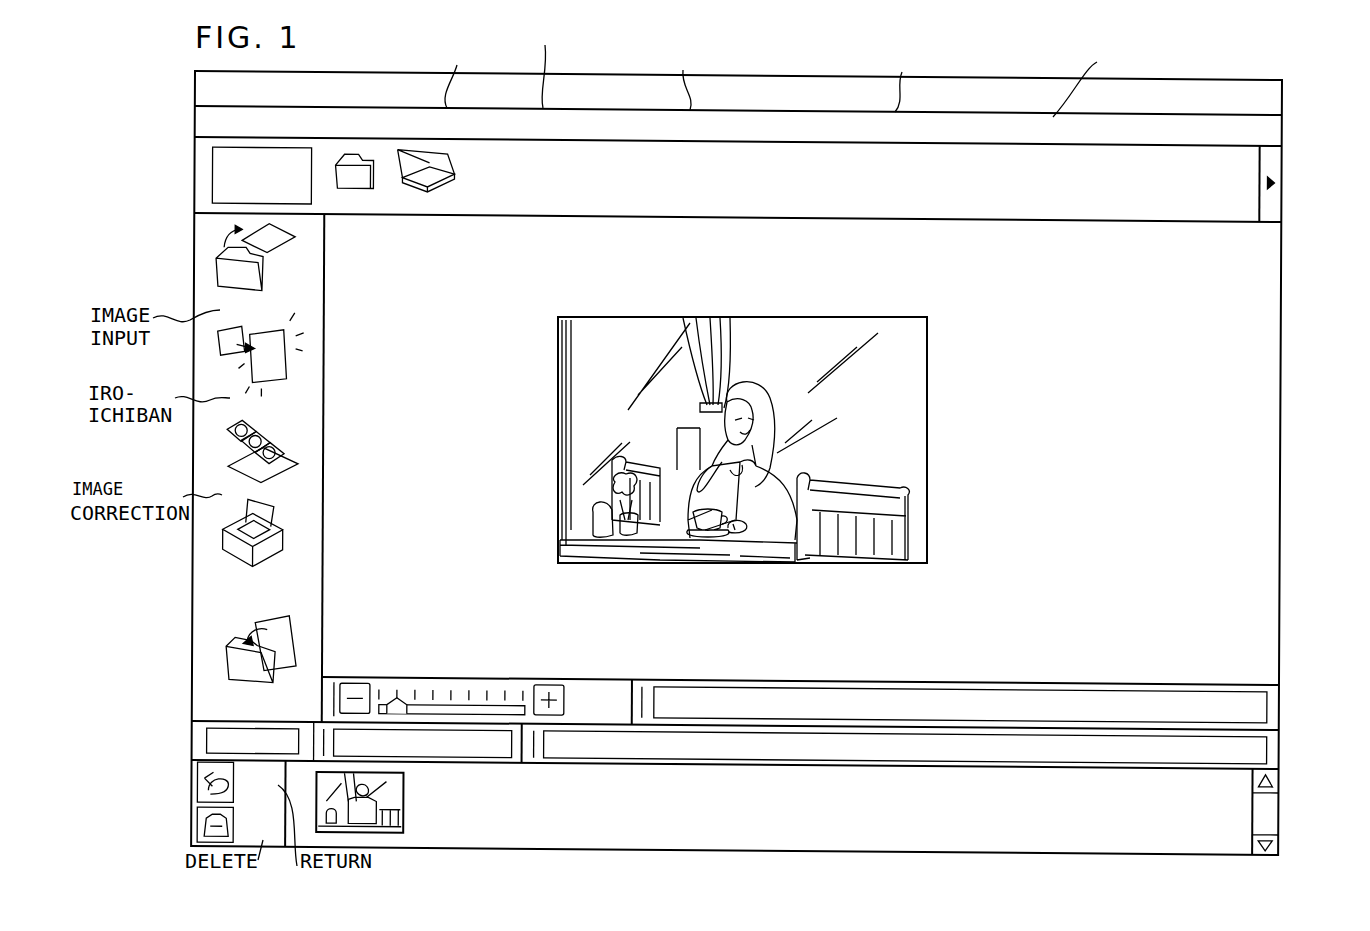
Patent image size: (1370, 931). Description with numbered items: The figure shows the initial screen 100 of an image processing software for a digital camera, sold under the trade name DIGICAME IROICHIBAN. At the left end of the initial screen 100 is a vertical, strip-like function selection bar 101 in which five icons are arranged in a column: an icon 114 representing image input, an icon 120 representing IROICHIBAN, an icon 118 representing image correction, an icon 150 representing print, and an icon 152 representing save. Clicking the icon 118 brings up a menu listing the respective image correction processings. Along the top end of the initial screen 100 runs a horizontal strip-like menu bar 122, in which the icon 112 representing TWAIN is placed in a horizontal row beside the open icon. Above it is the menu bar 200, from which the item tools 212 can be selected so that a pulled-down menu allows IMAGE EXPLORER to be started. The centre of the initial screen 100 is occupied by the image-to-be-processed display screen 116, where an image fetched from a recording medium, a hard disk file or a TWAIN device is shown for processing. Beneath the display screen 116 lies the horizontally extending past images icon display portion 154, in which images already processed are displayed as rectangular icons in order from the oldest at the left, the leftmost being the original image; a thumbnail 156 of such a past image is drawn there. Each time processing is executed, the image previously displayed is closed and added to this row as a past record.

The initial screen 100 is at (1021, 77).
The function selection bar 101 is at (208, 232).
The icon representing TWAIN 112 is at (428, 152).
The icon representing image input 114 is at (228, 268).
The image-to-be-processed display screen 116 is at (1258, 590).
The icon representing image correction 118 is at (250, 462).
The icon representing IROICHIBAN 120 is at (245, 362).
The menu bar 122 is at (1228, 176).
The icon representing print 150 is at (232, 547).
The icon representing save 152 is at (228, 645).
The past images icon display portion 154 is at (1232, 810).
The thumbnail image 156 is at (392, 797).
The menu bar 200 is at (1255, 135).
The tools 212 is at (788, 110).